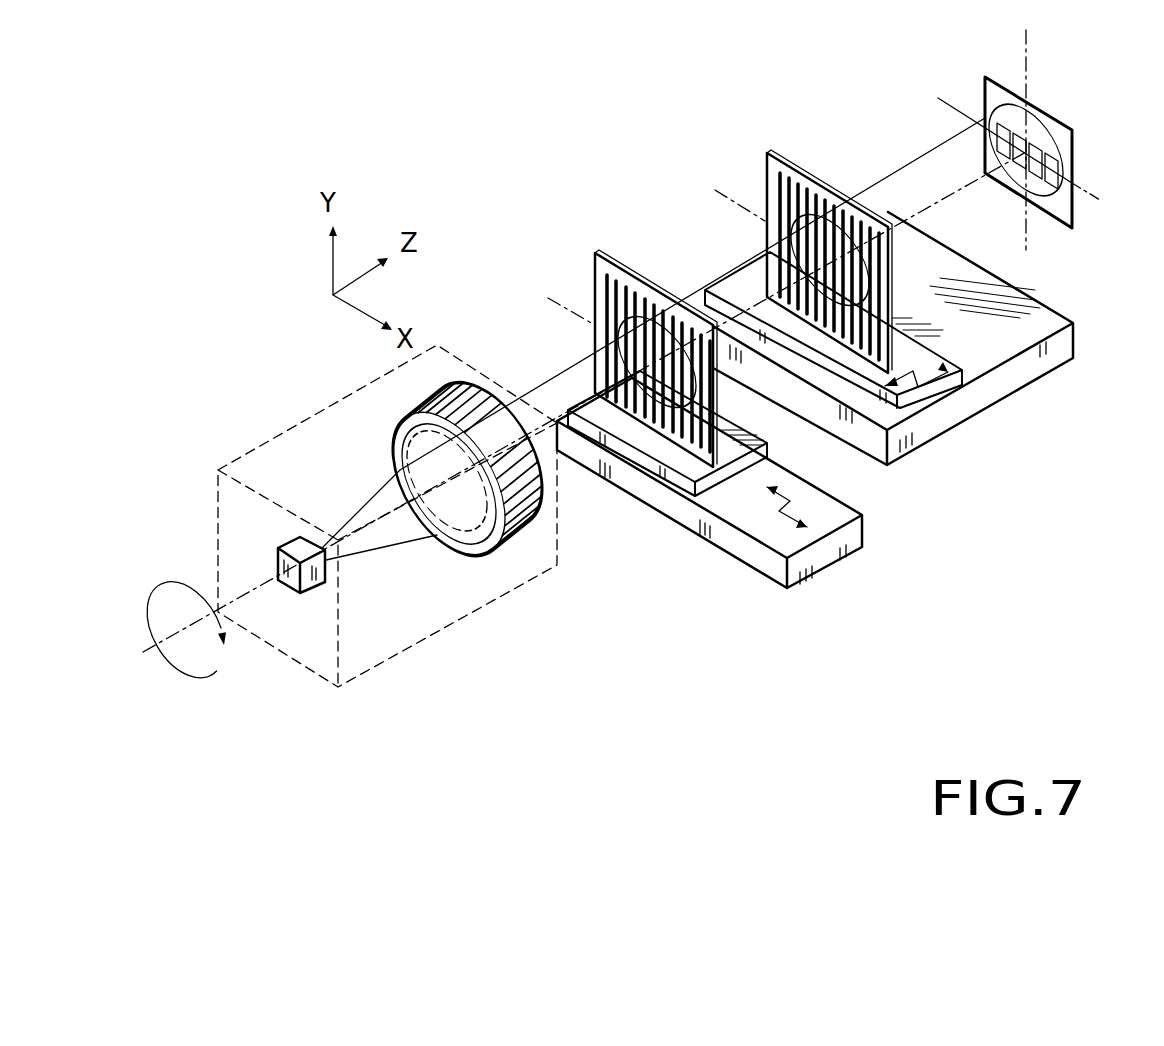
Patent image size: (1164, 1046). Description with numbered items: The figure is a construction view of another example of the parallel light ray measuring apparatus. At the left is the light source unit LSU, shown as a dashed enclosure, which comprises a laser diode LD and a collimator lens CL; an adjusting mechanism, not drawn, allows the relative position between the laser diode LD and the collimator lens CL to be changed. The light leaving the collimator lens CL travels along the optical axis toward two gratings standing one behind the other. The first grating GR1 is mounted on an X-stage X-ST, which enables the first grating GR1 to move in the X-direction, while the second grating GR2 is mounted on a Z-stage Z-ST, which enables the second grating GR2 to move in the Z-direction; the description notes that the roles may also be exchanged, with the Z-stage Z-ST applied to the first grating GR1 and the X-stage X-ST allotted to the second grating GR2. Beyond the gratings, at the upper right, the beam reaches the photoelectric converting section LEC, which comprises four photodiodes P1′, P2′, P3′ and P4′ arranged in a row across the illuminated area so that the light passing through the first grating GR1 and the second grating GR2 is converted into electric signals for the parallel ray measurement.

The laser diode LD is at (284, 548).
The collimator lens CL is at (437, 540).
The light source unit LSU is at (452, 628).
The first grating GR1 is at (592, 254).
The second grating GR2 is at (765, 160).
The X-stage X-ST is at (832, 566).
The Z-stage Z-ST is at (973, 418).
The photoelectric converting section LEC is at (985, 88).
The photodiode P1′ is at (1057, 156).
The photodiode P2′ is at (1043, 142).
The photodiode P3′ is at (1022, 132).
The photodiode P4′ is at (1007, 123).